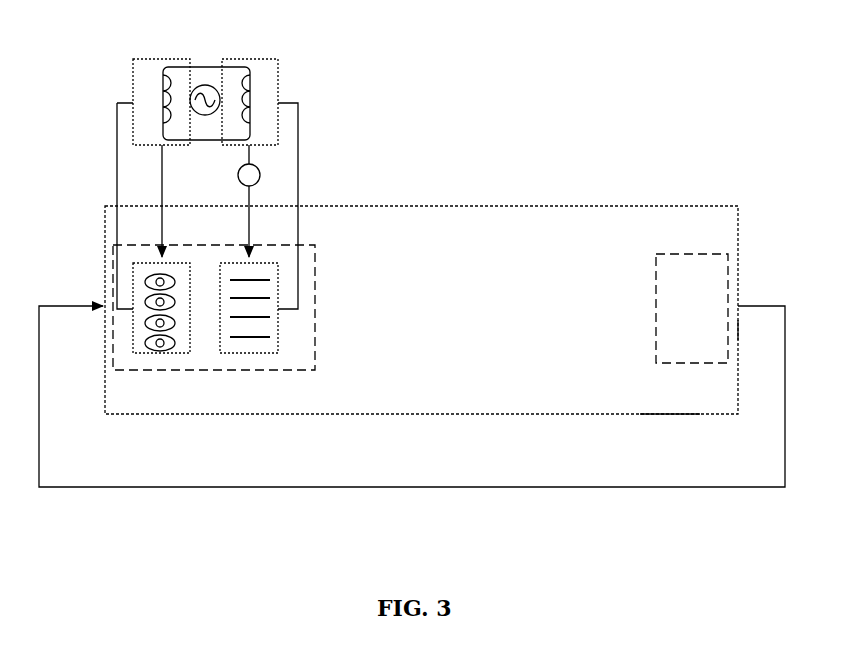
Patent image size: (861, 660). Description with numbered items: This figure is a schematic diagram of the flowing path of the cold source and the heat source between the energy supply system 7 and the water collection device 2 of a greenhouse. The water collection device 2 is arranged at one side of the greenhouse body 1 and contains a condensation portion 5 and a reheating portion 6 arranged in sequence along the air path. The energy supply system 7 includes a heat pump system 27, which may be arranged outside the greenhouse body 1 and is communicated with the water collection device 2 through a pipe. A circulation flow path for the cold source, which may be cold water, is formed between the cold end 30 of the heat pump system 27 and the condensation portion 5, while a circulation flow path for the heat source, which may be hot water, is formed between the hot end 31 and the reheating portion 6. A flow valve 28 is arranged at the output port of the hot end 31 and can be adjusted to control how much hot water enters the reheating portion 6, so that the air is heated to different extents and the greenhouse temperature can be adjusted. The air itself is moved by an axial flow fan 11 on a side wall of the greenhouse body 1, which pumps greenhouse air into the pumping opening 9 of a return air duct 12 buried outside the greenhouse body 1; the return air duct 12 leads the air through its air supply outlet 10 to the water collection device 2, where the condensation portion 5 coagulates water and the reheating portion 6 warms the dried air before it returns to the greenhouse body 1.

The greenhouse body 1 is at (663, 415).
The water collection device 2 is at (335, 253).
The condensation portion 5 is at (160, 362).
The reheating portion 6 is at (249, 362).
The energy supply system 7 is at (231, 159).
The pumping opening 9 is at (739, 323).
The air supply outlet 10 is at (103, 294).
The axial flow fan 11 is at (728, 280).
The return air duct 12 is at (585, 488).
The heat pump system 27 is at (193, 105).
The flow valve 28 is at (258, 168).
The cold end 30 is at (162, 57).
The hot end 31 is at (248, 57).